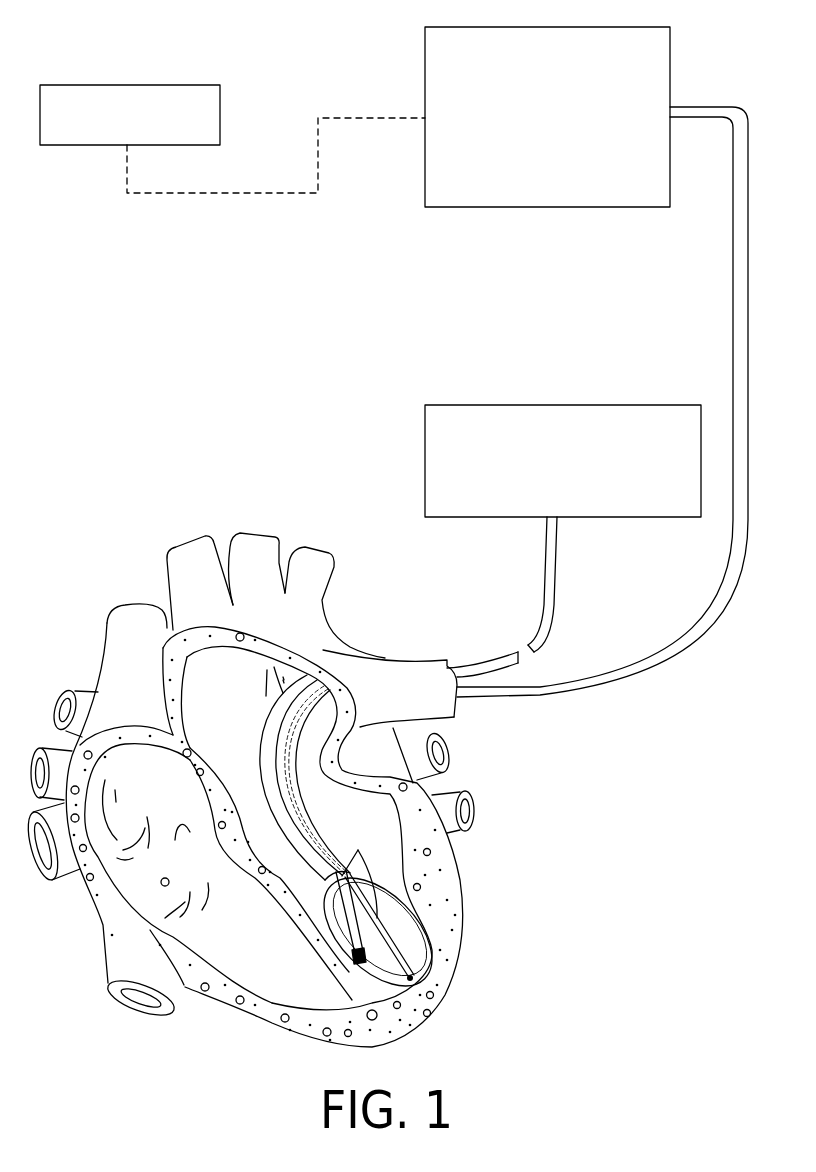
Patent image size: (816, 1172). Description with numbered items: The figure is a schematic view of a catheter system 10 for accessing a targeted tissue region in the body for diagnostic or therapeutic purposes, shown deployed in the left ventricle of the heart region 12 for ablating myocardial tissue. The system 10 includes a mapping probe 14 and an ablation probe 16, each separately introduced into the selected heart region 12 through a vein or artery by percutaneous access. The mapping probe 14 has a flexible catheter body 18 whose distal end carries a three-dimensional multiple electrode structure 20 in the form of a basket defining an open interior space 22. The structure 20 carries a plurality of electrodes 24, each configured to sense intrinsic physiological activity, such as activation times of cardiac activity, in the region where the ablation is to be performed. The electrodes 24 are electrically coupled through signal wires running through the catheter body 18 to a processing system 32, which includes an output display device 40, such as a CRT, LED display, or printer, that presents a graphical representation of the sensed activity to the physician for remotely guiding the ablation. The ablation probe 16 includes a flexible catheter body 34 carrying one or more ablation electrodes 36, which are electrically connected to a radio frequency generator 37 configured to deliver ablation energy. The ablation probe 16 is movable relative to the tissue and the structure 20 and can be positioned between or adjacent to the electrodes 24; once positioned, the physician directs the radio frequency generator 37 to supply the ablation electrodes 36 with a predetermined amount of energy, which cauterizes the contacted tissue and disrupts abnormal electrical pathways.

The system 10 is at (140, 461).
The heart region 12 is at (393, 820).
The mapping probe 14 is at (312, 789).
The ablation probe 16 is at (272, 868).
The catheter body 18 is at (318, 834).
The multiple electrode structure 20 is at (455, 910).
The open interior space 22 is at (405, 953).
The electrodes 24 is at (359, 872).
The processing system 32 is at (670, 68).
The catheter body 34 is at (260, 738).
The ablation electrodes 36 is at (345, 1013).
The radio frequency generator 37 is at (612, 517).
The output display device 40 is at (220, 135).